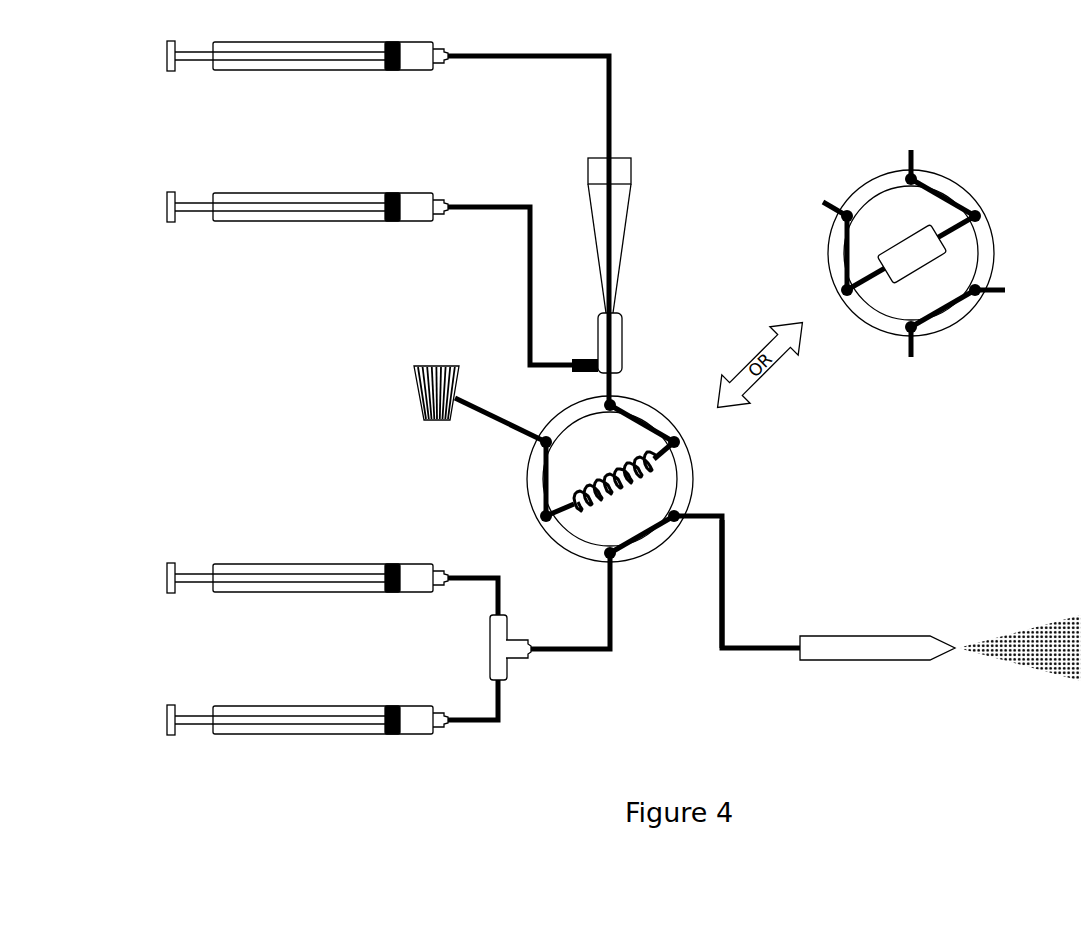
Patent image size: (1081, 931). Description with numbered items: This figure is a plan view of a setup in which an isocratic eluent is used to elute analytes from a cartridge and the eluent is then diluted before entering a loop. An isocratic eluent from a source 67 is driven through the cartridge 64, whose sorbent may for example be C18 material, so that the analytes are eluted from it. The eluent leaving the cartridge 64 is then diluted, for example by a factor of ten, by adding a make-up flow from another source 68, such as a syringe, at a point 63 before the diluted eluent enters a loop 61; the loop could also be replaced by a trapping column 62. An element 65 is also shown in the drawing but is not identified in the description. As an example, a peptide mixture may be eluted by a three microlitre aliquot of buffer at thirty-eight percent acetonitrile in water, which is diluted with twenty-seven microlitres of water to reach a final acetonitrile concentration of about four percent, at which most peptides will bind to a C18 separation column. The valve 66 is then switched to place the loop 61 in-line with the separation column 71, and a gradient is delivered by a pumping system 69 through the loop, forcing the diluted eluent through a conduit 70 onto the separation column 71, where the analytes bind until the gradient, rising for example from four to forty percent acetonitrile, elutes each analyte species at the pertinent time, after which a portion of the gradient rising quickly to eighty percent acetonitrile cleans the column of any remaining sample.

The loop 61 is at (670, 472).
The trapping column 62 is at (966, 248).
The point 63 is at (610, 467).
The cartridge 64 is at (632, 235).
The vial connector 65 is at (630, 343).
The valve 66 is at (467, 437).
The source 67 is at (307, 76).
The source 68 is at (307, 189).
The pumping system 69 is at (307, 649).
The conduit 70 is at (744, 584).
The separation column 71 is at (940, 642).